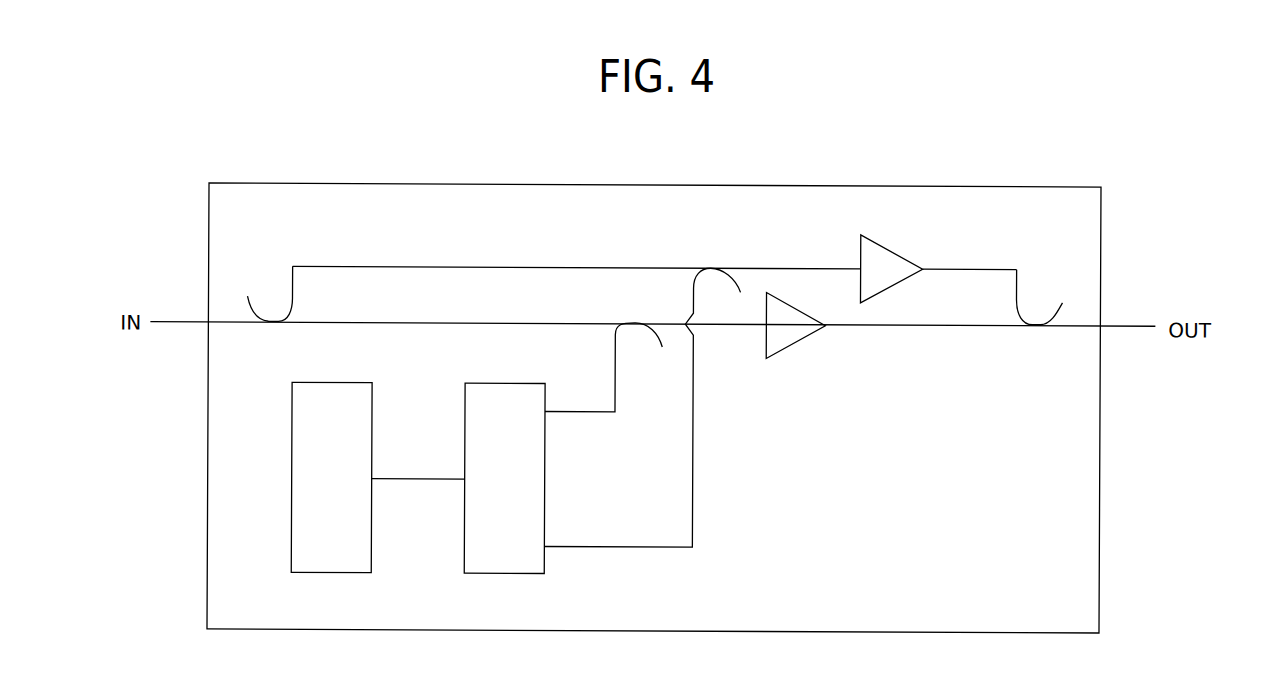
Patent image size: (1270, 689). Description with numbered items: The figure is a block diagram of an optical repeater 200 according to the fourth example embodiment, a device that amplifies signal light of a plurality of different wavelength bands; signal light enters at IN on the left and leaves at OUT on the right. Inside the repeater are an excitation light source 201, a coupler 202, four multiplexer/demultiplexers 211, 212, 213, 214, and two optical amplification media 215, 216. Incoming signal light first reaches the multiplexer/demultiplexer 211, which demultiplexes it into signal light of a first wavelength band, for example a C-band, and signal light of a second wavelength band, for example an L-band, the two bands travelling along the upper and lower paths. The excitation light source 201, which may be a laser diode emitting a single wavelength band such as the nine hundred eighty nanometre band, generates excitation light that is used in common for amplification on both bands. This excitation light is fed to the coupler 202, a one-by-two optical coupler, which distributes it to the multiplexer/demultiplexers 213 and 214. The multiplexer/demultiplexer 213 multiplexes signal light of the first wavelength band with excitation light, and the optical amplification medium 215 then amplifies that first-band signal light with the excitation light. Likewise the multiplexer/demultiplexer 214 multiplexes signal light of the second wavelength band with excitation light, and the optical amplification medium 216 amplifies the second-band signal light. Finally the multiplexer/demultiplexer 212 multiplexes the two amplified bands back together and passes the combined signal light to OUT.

The optical repeater 200 is at (878, 186).
The excitation light source 201 is at (348, 384).
The coupler 202 is at (527, 384).
The multiplexer/demultiplexer 211 is at (272, 327).
The multiplexer/demultiplexer 212 is at (1038, 330).
The multiplexer/demultiplexer 213 is at (717, 264).
The multiplexer/demultiplexer 214 is at (639, 320).
The optical amplification medium 215 is at (895, 253).
The optical amplification medium 216 is at (810, 334).